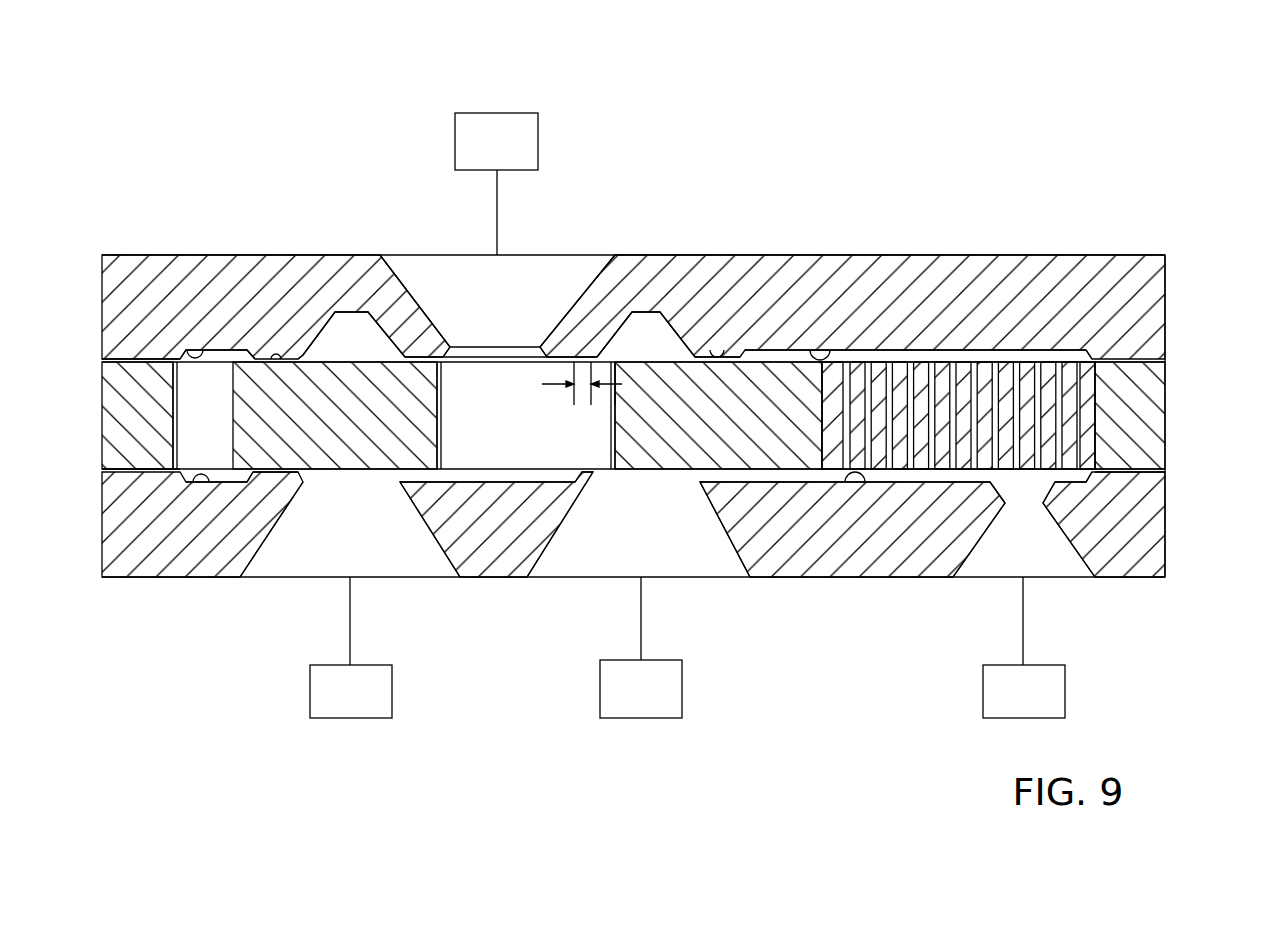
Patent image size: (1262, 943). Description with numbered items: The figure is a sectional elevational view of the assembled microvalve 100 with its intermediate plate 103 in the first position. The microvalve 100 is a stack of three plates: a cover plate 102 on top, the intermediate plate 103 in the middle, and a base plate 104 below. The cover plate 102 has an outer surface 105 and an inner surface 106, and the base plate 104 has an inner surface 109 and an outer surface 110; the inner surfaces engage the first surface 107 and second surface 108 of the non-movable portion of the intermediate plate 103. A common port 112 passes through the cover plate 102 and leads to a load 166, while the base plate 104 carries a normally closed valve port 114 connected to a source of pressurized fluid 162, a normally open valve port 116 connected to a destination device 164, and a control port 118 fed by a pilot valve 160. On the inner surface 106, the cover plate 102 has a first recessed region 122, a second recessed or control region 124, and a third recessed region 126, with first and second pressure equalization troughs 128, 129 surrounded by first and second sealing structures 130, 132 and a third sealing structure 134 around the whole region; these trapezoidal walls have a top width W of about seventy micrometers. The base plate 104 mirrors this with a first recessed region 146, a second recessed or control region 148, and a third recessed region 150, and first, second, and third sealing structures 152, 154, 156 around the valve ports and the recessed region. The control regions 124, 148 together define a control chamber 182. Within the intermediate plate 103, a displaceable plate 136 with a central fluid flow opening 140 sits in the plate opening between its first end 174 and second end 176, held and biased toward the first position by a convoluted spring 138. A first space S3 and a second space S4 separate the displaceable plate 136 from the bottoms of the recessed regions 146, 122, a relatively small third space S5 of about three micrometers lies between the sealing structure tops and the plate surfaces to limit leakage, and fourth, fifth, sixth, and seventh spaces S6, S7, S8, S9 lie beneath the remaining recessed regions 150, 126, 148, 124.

The microvalve 100 is at (249, 93).
The cover plate 102 is at (102, 322).
The intermediate plate 103 is at (102, 430).
The base plate 104 is at (102, 540).
The outer surface 105 is at (108, 255).
The inner surface 106 is at (1165, 380).
The first surface 107 is at (102, 359).
The second surface 108 is at (1165, 475).
The inner surface 109 is at (102, 468).
The outer surface 110 is at (1165, 577).
The common port 112 is at (405, 320).
The normally closed valve port 114 is at (290, 505).
The normally open valve port 116 is at (590, 500).
The control port 118 is at (1010, 530).
The first recessed region 122 is at (490, 355).
The second recessed or control region 124 is at (790, 352).
The third recessed region 126 is at (240, 352).
The first pressure equalization trough 128 is at (630, 350).
The second pressure equalization trough 129 is at (345, 332).
The first sealing structure 130 is at (590, 352).
The second sealing structure 132 is at (305, 345).
The third sealing structure 134 is at (340, 318).
The displaceable plate 136 is at (378, 437).
The convoluted spring 138 is at (1050, 500).
The fluid flow opening 140 is at (530, 455).
The first recessed region 146 is at (488, 472).
The second recessed or control region 148 is at (850, 482).
The third recessed region 150 is at (200, 482).
The first sealing structure 152 is at (595, 480).
The second sealing structure 154 is at (305, 485).
The third sealing structure 156 is at (250, 478).
The pilot valve 160 is at (983, 690).
The source of pressurized fluid 162 is at (310, 690).
The destination device 164 is at (600, 690).
The load 166 is at (455, 145).
The first end 174 is at (1050, 352).
The second end 176 is at (190, 415).
The control chamber 182 is at (955, 356).
The first space S3 is at (522, 470).
The second space S4 is at (470, 368).
The third space S5 is at (275, 355).
The fourth space S6 is at (205, 490).
The fifth space S7 is at (200, 350).
The sixth space S8 is at (900, 472).
The seventh space S9 is at (822, 350).
The width W is at (578, 408).